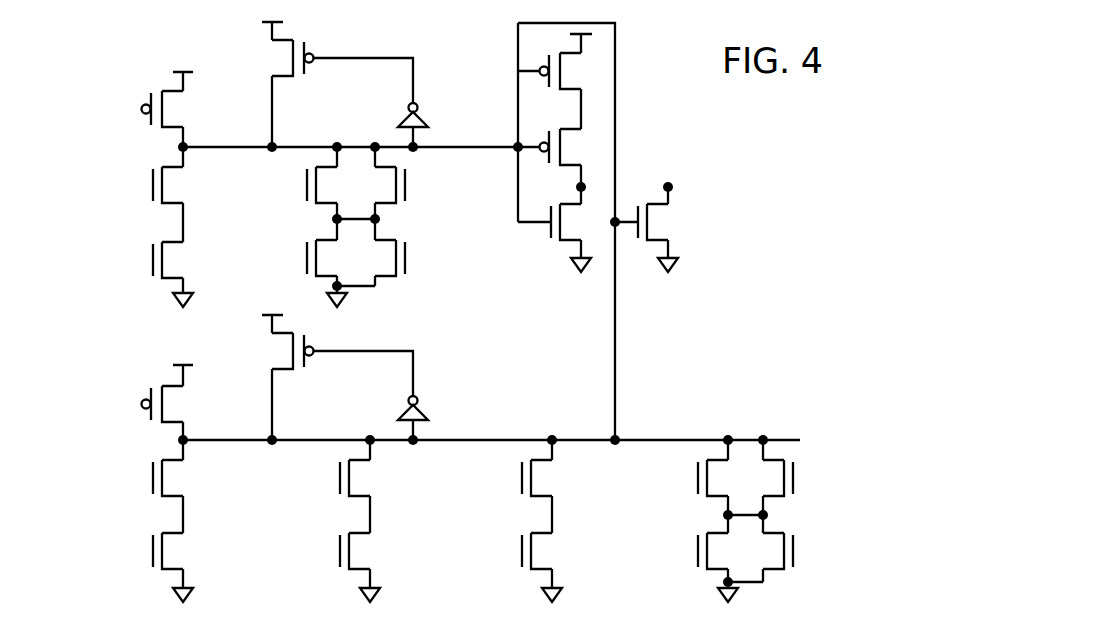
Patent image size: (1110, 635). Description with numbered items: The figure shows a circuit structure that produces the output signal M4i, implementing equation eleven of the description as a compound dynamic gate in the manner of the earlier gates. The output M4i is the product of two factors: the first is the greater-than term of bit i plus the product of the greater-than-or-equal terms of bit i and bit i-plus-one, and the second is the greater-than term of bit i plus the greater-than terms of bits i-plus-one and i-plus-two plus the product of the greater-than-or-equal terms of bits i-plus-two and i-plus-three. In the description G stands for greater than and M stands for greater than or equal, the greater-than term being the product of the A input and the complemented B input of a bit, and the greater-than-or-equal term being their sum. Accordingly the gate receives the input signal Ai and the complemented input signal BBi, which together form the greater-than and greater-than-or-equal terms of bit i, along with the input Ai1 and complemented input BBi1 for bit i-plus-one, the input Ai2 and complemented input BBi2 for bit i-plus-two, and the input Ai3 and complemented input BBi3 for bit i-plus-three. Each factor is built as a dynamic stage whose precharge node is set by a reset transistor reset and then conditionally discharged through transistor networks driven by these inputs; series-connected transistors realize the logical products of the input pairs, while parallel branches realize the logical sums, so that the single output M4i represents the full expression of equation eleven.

The reset PMOS transistor reset is at (142, 404).
The A(i) Ai is at (153, 478).
The B_B(i) BBi is at (153, 551).
The A(i+1) Ai1 is at (340, 478).
The B_B(i+1) BBi1 is at (340, 551).
The A(i+2) Ai2 is at (698, 551).
The B_B(i+2) BBi2 is at (820, 551).
The A(i+3) Ai3 is at (698, 478).
The B_B(i+3) BBi3 is at (793, 478).
The M4(i) M4i is at (581, 187).